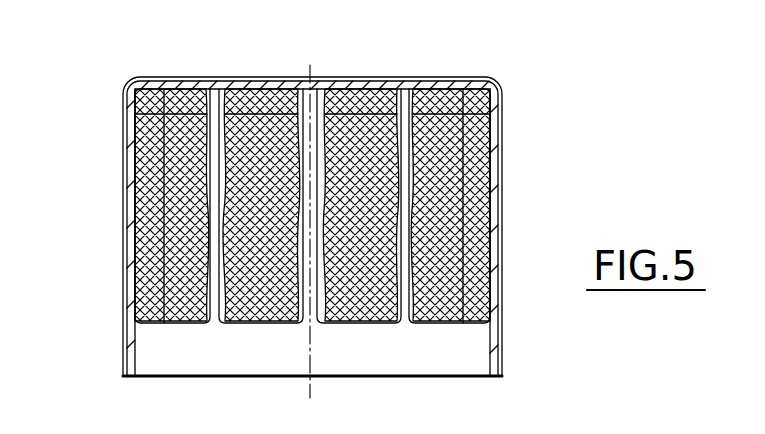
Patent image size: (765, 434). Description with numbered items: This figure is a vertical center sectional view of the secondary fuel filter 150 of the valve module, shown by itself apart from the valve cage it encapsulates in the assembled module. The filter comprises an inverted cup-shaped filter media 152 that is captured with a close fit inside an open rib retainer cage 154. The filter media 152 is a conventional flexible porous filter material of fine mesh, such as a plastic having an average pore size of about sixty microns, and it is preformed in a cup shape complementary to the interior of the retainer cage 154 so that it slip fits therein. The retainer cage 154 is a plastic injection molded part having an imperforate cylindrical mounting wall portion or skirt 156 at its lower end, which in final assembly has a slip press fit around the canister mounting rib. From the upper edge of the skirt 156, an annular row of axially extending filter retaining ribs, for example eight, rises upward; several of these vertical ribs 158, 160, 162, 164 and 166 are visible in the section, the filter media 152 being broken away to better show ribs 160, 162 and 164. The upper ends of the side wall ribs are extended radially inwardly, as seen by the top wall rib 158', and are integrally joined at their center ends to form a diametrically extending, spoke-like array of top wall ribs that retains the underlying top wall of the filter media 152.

The secondary fuel filter 150 is at (556, 59).
The filter media 152 is at (503, 147).
The open rib retainer cage 154 is at (504, 322).
The skirt 156 is at (280, 360).
The vertical rib 158 is at (85, 224).
The top wall rib 158' is at (315, 59).
The vertical rib 160 is at (235, 82).
The vertical rib 162 is at (325, 93).
The vertical rib 164 is at (443, 88).
The vertical rib 166 is at (413, 82).